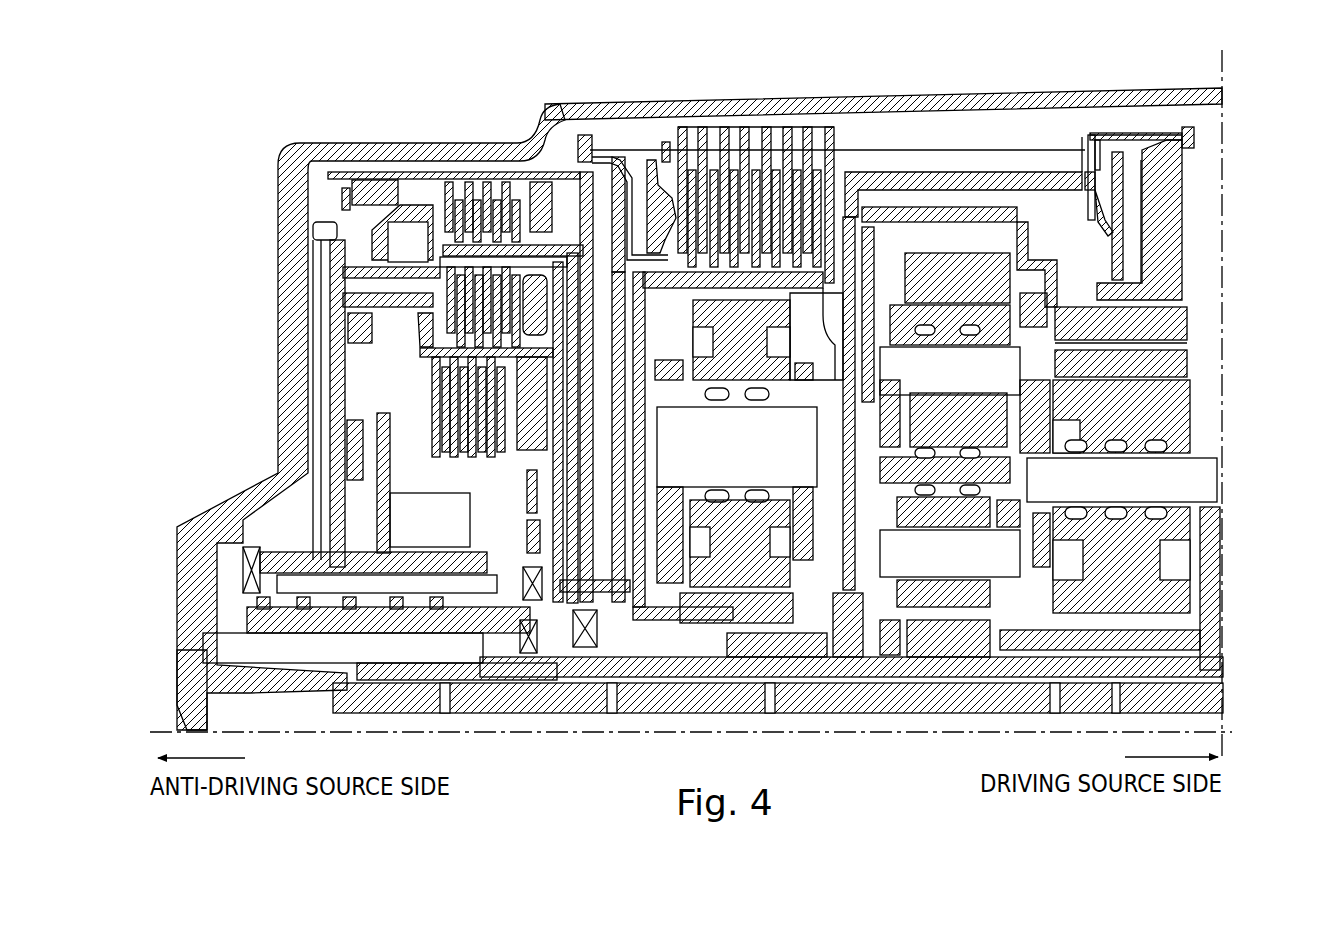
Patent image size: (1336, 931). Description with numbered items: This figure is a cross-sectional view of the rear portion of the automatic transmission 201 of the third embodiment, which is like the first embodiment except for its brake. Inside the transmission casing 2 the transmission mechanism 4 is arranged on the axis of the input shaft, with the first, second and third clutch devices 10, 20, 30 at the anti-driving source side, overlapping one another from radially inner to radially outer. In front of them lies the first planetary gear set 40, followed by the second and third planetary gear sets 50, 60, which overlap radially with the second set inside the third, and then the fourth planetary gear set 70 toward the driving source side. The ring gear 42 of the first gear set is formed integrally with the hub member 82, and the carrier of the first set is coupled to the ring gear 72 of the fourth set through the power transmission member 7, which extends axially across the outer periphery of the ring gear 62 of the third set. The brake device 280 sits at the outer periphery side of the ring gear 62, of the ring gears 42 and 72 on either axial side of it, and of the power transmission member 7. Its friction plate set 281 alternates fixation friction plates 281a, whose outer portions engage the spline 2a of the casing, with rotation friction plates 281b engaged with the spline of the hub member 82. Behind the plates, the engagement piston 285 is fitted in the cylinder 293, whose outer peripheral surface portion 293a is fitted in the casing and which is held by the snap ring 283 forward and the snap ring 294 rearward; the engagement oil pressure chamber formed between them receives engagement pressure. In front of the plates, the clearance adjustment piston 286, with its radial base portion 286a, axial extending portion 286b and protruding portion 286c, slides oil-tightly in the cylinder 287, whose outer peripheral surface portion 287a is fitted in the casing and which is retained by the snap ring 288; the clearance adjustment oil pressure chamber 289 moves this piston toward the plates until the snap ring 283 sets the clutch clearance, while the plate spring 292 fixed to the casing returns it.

The automatic transmission 201 is at (235, 112).
The transmission casing 2 is at (968, 92).
The spline 2a is at (870, 123).
The transmission mechanism 4 is at (1205, 296).
The power transmission member 7 is at (940, 212).
The first clutch device 10 is at (552, 420).
The second clutch device 20 is at (550, 320).
The third clutch device 30 is at (427, 167).
The first planetary gear set 40 is at (800, 640).
The ring gear 42 is at (822, 290).
The second planetary gear set 50 is at (1015, 612).
The third planetary gear set 60 is at (1058, 398).
The ring gear 62 is at (1005, 245).
The fourth planetary gear set 70 is at (1195, 357).
The ring gear 72 is at (1190, 322).
The hub member 82 is at (782, 283).
The brake device 280 is at (1195, 170).
The friction plate set 281 is at (840, 122).
The fixation friction plates 281a is at (680, 135).
The rotation friction plates 281b is at (715, 160).
The snap ring 283 is at (665, 140).
The engagement piston 285 is at (678, 220).
The clearance adjustment piston 286 is at (990, 163).
The base portion 286a is at (1125, 248).
The extending portion 286b is at (885, 165).
The protruding portion 286c is at (1100, 232).
The cylinder 287 is at (1165, 200).
The outer peripheral surface portion 287a is at (1150, 160).
The snap ring 288 is at (1195, 132).
The clearance adjustment oil pressure chamber 289 is at (1135, 265).
The plate spring 292 is at (583, 140).
The cylinder 293 is at (712, 290).
The outer peripheral surface portion 293a is at (627, 157).
The snap ring 294 is at (555, 118).